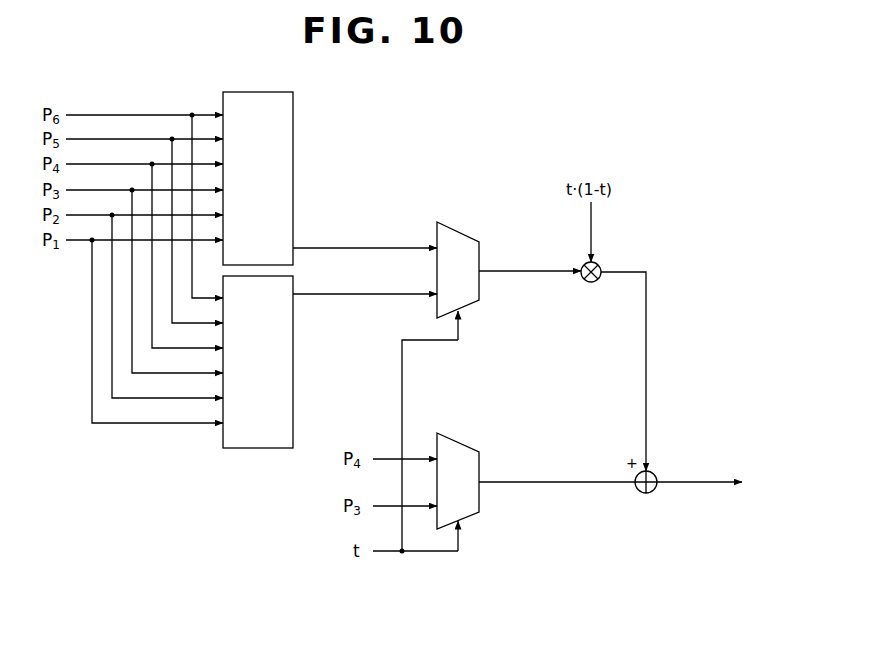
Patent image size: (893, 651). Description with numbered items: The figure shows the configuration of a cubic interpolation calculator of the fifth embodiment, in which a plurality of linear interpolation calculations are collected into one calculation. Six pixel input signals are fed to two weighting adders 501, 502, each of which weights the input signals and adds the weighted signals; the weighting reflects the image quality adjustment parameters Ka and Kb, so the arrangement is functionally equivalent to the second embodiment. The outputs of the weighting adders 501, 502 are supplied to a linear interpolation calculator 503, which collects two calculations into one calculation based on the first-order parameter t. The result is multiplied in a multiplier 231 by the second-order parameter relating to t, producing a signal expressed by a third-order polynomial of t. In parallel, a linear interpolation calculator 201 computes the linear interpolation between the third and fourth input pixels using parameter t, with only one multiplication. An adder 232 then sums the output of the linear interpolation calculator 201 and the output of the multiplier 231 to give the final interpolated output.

The weighting adder 501 is at (293, 113).
The weighting adder 502 is at (293, 368).
The linear interpolation calculator 503 is at (477, 220).
The linear interpolation calculator 201 is at (475, 428).
The multiplier 231 is at (599, 263).
The adder 232 is at (656, 474).